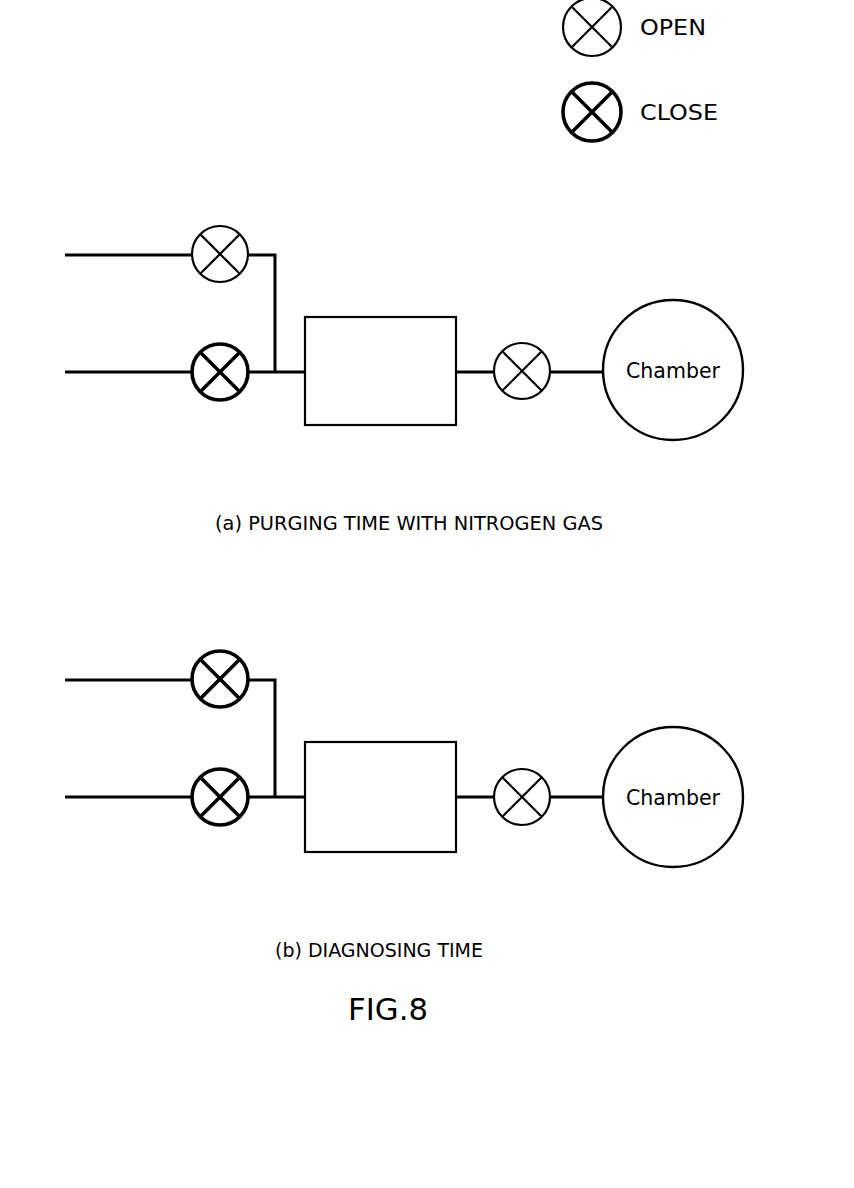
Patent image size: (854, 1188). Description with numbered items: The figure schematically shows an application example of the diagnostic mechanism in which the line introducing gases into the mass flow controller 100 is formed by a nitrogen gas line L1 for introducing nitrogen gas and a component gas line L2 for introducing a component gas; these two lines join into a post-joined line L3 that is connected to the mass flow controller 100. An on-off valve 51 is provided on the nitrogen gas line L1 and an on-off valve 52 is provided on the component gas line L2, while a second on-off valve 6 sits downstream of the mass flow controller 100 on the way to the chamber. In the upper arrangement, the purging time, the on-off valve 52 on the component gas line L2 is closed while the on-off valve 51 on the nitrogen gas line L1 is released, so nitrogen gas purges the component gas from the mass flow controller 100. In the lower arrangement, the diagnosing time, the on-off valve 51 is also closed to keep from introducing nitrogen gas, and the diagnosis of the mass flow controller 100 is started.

The nitrogen gas line L1 is at (123, 254).
The component gas line L2 is at (123, 371).
The post-joined line L3 is at (287, 371).
The on-off valve 51 is at (229, 226).
The on-off valve 52 is at (215, 401).
The mass flow controller 100 is at (383, 316).
The second on-off valve 6 is at (536, 344).